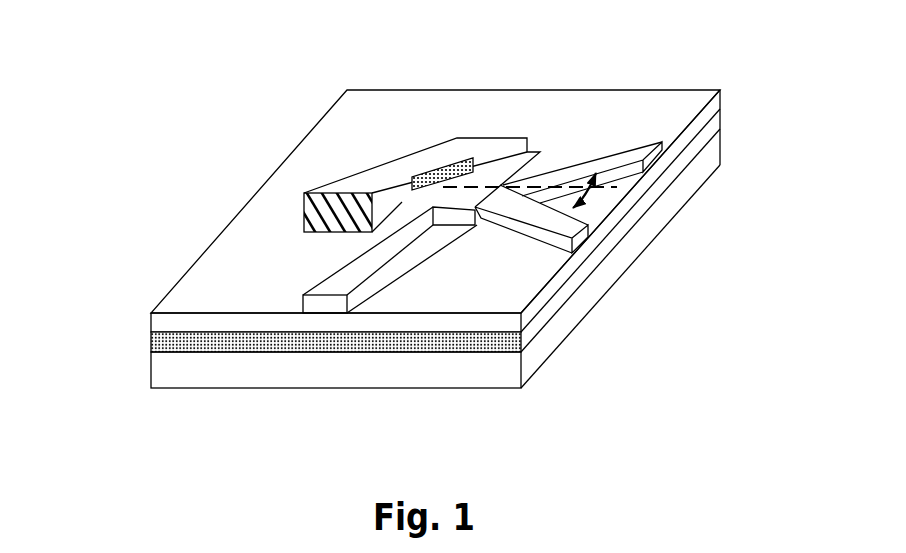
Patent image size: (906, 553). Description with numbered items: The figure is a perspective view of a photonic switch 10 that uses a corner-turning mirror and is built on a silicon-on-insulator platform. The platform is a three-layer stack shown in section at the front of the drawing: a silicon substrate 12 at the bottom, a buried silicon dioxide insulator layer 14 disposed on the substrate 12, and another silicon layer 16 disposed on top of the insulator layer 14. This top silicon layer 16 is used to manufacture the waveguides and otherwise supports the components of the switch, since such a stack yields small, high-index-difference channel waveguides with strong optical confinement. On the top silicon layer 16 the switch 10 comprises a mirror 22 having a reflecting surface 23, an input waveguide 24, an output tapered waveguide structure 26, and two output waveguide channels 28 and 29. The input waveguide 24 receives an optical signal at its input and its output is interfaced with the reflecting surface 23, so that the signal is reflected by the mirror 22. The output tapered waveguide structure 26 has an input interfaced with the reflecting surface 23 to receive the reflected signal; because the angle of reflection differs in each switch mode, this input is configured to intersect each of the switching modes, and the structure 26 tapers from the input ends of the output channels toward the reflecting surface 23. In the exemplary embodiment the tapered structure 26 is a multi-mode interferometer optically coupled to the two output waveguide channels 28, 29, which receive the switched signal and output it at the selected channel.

The photonic switch 10 is at (189, 83).
The silicon substrate 12 is at (145, 372).
The silicon dioxide layer 14 is at (145, 343).
The silicon layer 16 is at (145, 319).
The mirror 22 is at (297, 207).
The reflecting surface 23 is at (432, 172).
The input waveguide 24 is at (313, 272).
The output tapered waveguide structure 26 is at (491, 183).
The output waveguide channel 28 is at (619, 153).
The output waveguide channel 29 is at (585, 237).